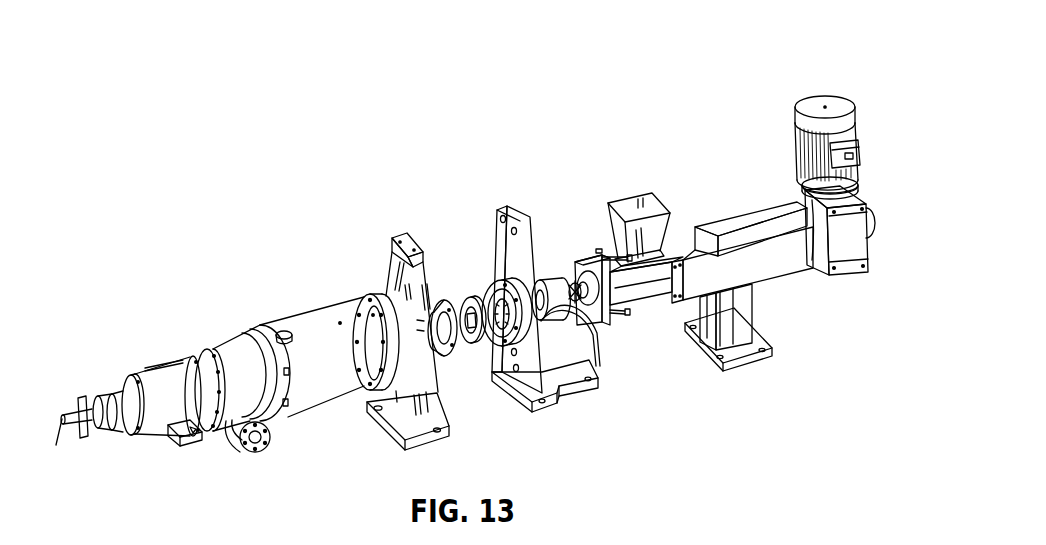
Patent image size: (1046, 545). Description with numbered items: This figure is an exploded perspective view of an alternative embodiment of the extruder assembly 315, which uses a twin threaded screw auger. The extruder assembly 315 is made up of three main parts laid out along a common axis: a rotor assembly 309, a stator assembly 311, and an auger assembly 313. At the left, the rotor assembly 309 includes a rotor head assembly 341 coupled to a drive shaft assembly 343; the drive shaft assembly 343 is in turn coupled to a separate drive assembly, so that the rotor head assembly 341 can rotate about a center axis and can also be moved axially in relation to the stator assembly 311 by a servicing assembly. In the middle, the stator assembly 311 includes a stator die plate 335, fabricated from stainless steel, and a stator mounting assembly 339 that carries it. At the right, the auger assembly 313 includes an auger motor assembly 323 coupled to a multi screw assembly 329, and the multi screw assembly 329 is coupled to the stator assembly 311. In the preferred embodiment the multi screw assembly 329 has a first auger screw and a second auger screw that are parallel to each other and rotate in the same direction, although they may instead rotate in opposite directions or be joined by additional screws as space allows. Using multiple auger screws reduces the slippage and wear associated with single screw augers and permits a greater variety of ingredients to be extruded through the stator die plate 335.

The drive shaft assembly 343 is at (314, 244).
The rotor assembly 309 is at (438, 282).
The stator assembly 311 is at (483, 250).
The stator die plate 335 is at (472, 293).
The rotor head assembly 341 is at (451, 372).
The stator mounting assembly 339 is at (487, 365).
The multi screw assembly 329 is at (570, 233).
The extruder assembly 315 is at (675, 474).
The auger assembly 313 is at (788, 327).
The auger motor assembly 323 is at (832, 81).